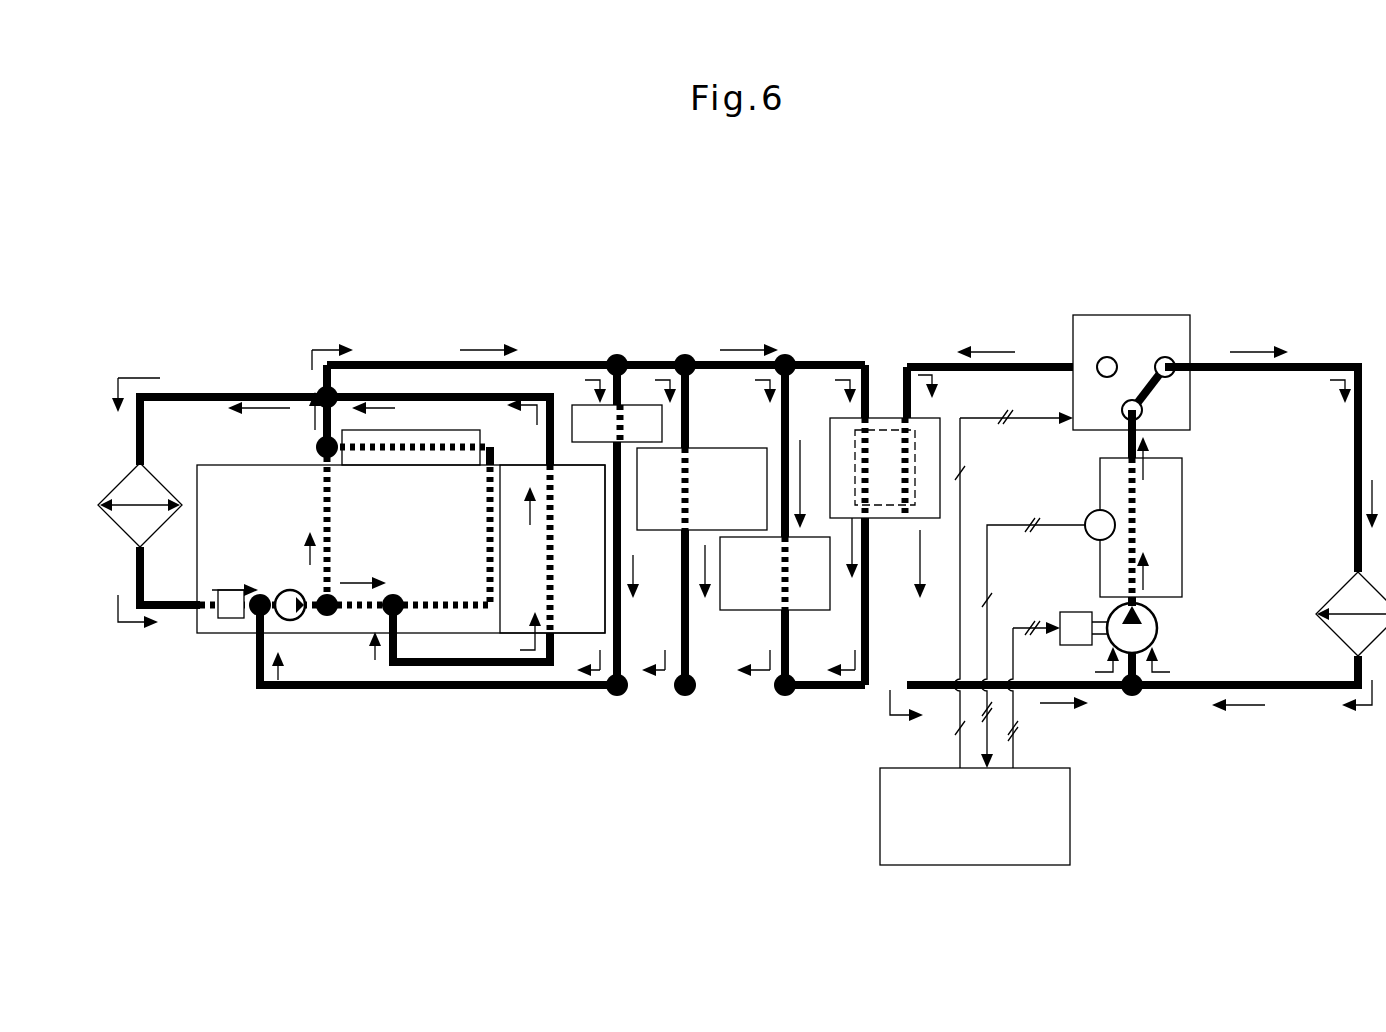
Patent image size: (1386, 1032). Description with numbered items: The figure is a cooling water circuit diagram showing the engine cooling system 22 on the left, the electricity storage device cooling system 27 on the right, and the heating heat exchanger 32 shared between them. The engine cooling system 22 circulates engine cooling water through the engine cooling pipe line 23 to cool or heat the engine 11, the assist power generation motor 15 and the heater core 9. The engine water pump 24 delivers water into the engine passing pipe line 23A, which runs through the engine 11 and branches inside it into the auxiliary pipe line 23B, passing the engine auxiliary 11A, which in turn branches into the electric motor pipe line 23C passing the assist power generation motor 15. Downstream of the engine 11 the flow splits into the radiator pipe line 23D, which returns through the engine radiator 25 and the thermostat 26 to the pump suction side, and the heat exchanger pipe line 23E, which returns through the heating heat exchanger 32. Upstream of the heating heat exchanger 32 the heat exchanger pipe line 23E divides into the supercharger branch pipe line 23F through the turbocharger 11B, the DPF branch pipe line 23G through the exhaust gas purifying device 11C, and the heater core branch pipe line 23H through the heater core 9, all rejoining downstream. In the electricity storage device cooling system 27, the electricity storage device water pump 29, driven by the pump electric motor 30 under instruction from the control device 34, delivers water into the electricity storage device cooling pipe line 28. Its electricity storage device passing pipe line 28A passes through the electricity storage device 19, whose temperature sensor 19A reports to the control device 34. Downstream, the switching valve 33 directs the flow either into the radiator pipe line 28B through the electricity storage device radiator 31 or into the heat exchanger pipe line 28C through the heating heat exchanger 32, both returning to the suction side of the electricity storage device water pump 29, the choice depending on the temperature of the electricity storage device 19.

The heater core 9 is at (810, 590).
The engine 11 is at (222, 482).
The engine auxiliary 11A is at (412, 430).
The turbocharger 11B is at (622, 402).
The exhaust gas purifying device 11C is at (740, 446).
The assist power generation motor 15 is at (575, 610).
The electricity storage device 19 is at (1182, 499).
The temperature sensor 19A is at (1090, 512).
The engine cooling system 22 is at (372, 342).
The engine cooling pipe line 23 is at (433, 364).
The engine passing pipe line 23A is at (318, 615).
The auxiliary pipe line 23B is at (448, 614).
The electric motor pipe line 23C is at (505, 668).
The radiator pipe line 23D is at (252, 396).
The heat exchanger pipe line 23E is at (548, 360).
The supercharger branch pipe line 23F is at (623, 665).
The DPF branch pipe line 23G is at (693, 660).
The heater core branch pipe line 23H is at (790, 430).
The engine water pump 24 is at (292, 622).
The engine radiator 25 is at (113, 530).
The thermostat 26 is at (228, 612).
The electricity storage device cooling system 27 is at (1210, 325).
The electricity storage device cooling pipe line 28 is at (1318, 363).
The electricity storage device passing pipe line 28A is at (1128, 572).
The radiator pipe line 28B is at (1265, 372).
The heat exchanger pipe line 28C is at (1050, 364).
The electricity storage device water pump 29 is at (1158, 632).
The pump electric motor 30 is at (1078, 647).
The electricity storage device radiator 31 is at (1335, 592).
The heating heat exchanger 32 is at (888, 416).
The switching valve 33 is at (1135, 313).
The control device 34 is at (1072, 815).